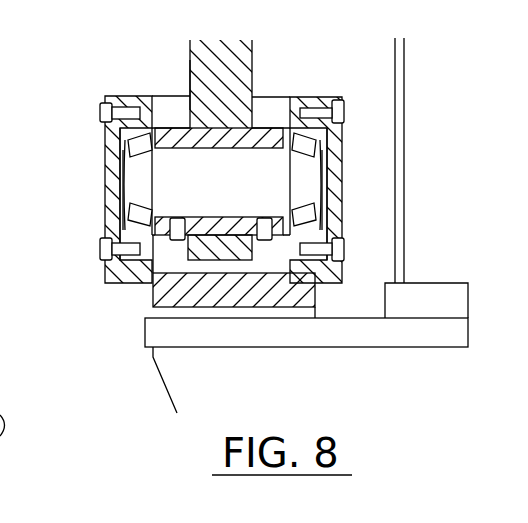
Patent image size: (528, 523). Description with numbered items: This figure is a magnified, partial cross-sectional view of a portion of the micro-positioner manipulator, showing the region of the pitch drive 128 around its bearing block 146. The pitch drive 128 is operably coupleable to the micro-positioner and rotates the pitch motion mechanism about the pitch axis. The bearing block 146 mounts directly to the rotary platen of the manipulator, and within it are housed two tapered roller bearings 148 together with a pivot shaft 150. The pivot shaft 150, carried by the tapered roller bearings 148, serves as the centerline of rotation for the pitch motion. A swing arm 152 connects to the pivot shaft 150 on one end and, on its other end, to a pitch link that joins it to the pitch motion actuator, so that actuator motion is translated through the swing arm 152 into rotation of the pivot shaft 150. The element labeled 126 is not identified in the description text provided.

The drive assembly 126 is at (400, 383).
The pitch drive 128 is at (240, 59).
The bearing block 146 is at (272, 255).
The tapered roller bearings 148 is at (105, 145).
The pivot shaft 150 is at (248, 190).
The swing arm 152 is at (197, 80).